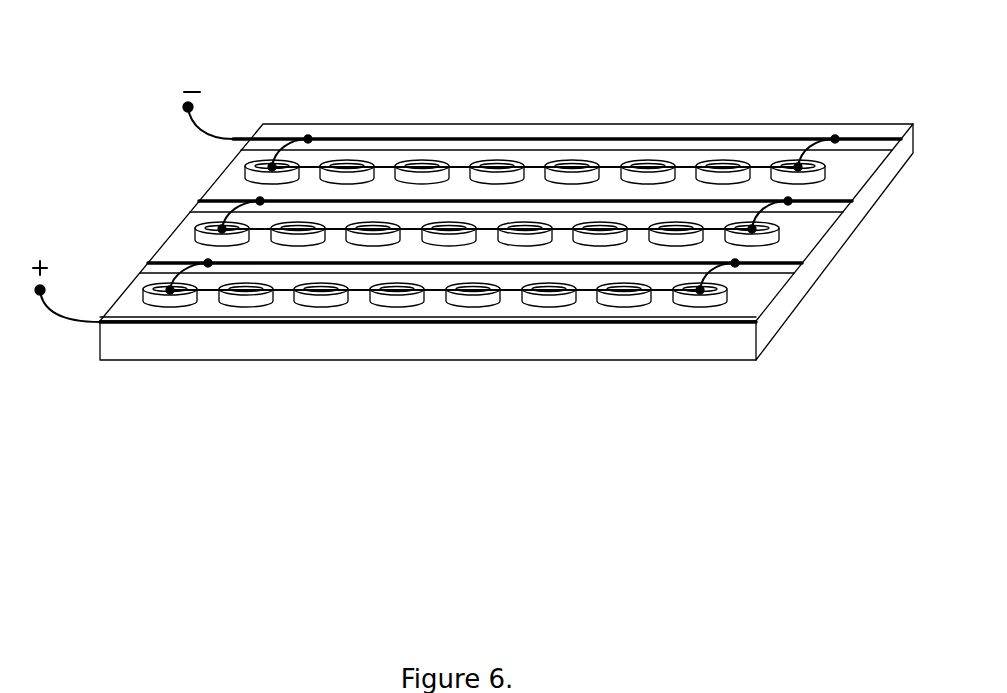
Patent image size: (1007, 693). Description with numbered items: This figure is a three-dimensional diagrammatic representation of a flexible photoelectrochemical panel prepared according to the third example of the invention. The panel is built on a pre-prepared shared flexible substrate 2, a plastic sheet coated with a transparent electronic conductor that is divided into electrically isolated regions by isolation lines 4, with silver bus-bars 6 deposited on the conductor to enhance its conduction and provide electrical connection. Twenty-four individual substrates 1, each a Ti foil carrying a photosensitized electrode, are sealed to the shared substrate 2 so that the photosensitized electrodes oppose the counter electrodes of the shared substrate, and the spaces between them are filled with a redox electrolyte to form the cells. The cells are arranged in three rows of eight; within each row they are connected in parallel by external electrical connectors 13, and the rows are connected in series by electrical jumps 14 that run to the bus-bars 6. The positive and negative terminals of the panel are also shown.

The individual substrate 1 is at (427, 157).
The shared flexible substrate 2 is at (130, 343).
The isolation lines 4 is at (602, 148).
The Ag bus-bars 6 is at (798, 132).
The external electrical connectors 13 is at (320, 165).
The electrical jumps 14 is at (268, 160).